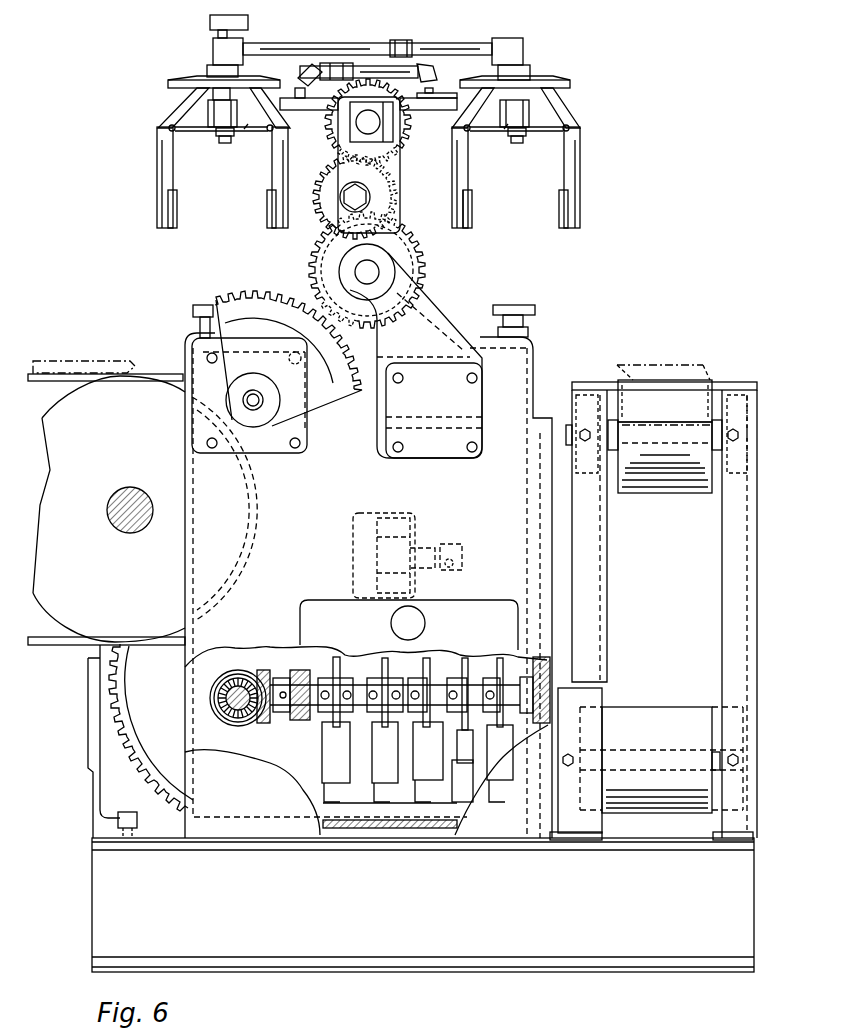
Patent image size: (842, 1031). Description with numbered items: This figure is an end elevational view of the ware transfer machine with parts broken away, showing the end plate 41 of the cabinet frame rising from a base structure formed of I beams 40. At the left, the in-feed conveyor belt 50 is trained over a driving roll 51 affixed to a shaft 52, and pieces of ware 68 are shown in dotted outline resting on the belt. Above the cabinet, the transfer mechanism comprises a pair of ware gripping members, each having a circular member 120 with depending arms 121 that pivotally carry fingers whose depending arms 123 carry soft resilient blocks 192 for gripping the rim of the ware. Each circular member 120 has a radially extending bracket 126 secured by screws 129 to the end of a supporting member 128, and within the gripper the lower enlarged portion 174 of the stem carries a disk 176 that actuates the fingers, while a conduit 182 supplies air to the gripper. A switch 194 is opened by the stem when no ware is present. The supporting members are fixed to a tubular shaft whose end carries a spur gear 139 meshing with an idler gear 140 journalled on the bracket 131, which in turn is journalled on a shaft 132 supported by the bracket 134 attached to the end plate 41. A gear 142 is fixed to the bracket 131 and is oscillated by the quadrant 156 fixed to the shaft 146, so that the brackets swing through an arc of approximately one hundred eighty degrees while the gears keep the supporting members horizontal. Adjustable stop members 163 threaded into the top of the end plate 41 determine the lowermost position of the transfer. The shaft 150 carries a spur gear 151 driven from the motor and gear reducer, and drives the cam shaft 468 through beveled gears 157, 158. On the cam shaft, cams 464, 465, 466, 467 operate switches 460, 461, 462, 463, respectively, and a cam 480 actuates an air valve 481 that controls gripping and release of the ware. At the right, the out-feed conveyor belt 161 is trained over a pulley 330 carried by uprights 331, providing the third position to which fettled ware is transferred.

The I beams 40 is at (423, 905).
The end plate 41 is at (368, 585).
The conveyor belt 50 is at (77, 381).
The driving roll 51 is at (145, 509).
The shaft 52 is at (140, 488).
The pieces of ware 68 is at (113, 360).
The circular member 120 is at (369, 109).
The depending arms 121 is at (173, 105).
The depending arm 123 is at (162, 183).
The radially extending bracket 126 is at (284, 90).
The supporting members 128 is at (338, 134).
The screws 129 is at (440, 81).
The brackets 131 is at (392, 168).
The shafts 132 is at (410, 351).
The bracket 134 is at (434, 410).
The spur gear 139 is at (390, 95).
The idler gear 140 is at (323, 180).
The gear 142 is at (425, 249).
The shaft 146 is at (258, 395).
The shaft 150 is at (218, 687).
The spur gear 151 is at (140, 741).
The quadrant 156 is at (288, 358).
The beveled gear 157 is at (243, 669).
The beveled gear 158 is at (262, 722).
The out-feed conveyor belt 161 is at (675, 490).
The adjustable stop members 163 is at (203, 305).
The lower enlarged portion 174 is at (203, 129).
The disk 176 is at (248, 129).
The conduit 182 is at (310, 43).
The blocks 192 is at (467, 210).
The switch 194 is at (249, 22).
The pulley 330 is at (612, 487).
The uprights 331 is at (603, 563).
The switch 460 is at (336, 762).
The switch 461 is at (385, 762).
The switch 462 is at (428, 762).
The switch 463 is at (500, 763).
The cam 464 is at (337, 662).
The cam 465 is at (385, 658).
The cam 466 is at (452, 640).
The cam 467 is at (513, 650).
The cam shaft 468 is at (313, 723).
The cam 480 is at (487, 640).
The air valve 481 is at (457, 790).